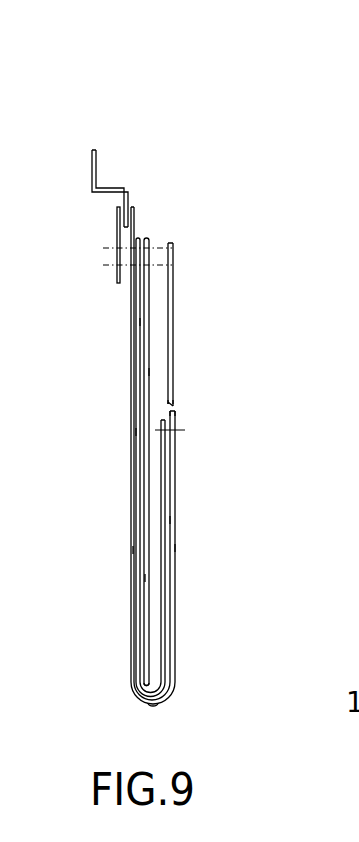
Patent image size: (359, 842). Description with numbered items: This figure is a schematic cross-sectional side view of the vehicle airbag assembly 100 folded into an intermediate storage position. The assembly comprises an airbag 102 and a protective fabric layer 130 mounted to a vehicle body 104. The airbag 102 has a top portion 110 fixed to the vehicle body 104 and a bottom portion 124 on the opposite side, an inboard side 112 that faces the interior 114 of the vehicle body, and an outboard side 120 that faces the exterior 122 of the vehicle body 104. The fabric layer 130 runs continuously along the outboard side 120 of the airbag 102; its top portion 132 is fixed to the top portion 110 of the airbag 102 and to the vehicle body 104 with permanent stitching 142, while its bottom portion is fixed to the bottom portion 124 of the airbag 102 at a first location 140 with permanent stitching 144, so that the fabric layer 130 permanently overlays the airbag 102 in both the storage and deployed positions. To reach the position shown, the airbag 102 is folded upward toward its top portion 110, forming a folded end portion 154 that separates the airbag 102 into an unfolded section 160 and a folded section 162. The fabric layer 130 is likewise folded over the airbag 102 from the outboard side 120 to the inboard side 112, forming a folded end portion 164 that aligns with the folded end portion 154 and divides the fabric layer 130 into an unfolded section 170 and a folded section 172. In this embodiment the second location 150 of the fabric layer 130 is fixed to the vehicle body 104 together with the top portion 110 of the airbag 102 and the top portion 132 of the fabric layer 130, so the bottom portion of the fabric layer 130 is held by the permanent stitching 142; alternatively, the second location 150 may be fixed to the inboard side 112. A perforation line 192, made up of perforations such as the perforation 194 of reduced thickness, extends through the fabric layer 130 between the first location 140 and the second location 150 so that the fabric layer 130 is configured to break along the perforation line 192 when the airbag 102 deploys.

The vehicle airbag assembly 100 is at (102, 98).
The vehicle body 104 is at (114, 188).
The top portion of the fabric layer 132 is at (137, 238).
The top portion of the airbag 110 is at (147, 238).
The interior of the vehicle body 114 is at (247, 189).
The second location of the fabric layer 150 is at (173, 258).
The permanent stitching 142 is at (109, 250).
The outboard side of the airbag 120 is at (140, 322).
The inboard side of the airbag 112 is at (149, 372).
The perforation line 192 is at (229, 385).
The perforation 194 is at (176, 404).
The airbag 102 is at (136, 423).
The protective fabric layer 130 is at (136, 432).
The bottom portion of the airbag 124 is at (161, 470).
The exterior of the vehicle body 122 is at (103, 508).
The first location of the fabric layer 140 is at (176, 427).
The permanent stitching 144 is at (183, 432).
The folded section of the airbag 162 is at (170, 520).
The unfolded section of the fabric layer 170 is at (134, 550).
The folded section of the fabric layer 172 is at (176, 548).
The unfolded section of the airbag 160 is at (146, 578).
The folded end portion of the airbag 154 is at (168, 684).
The folded end portion of the fabric layer 164 is at (156, 705).